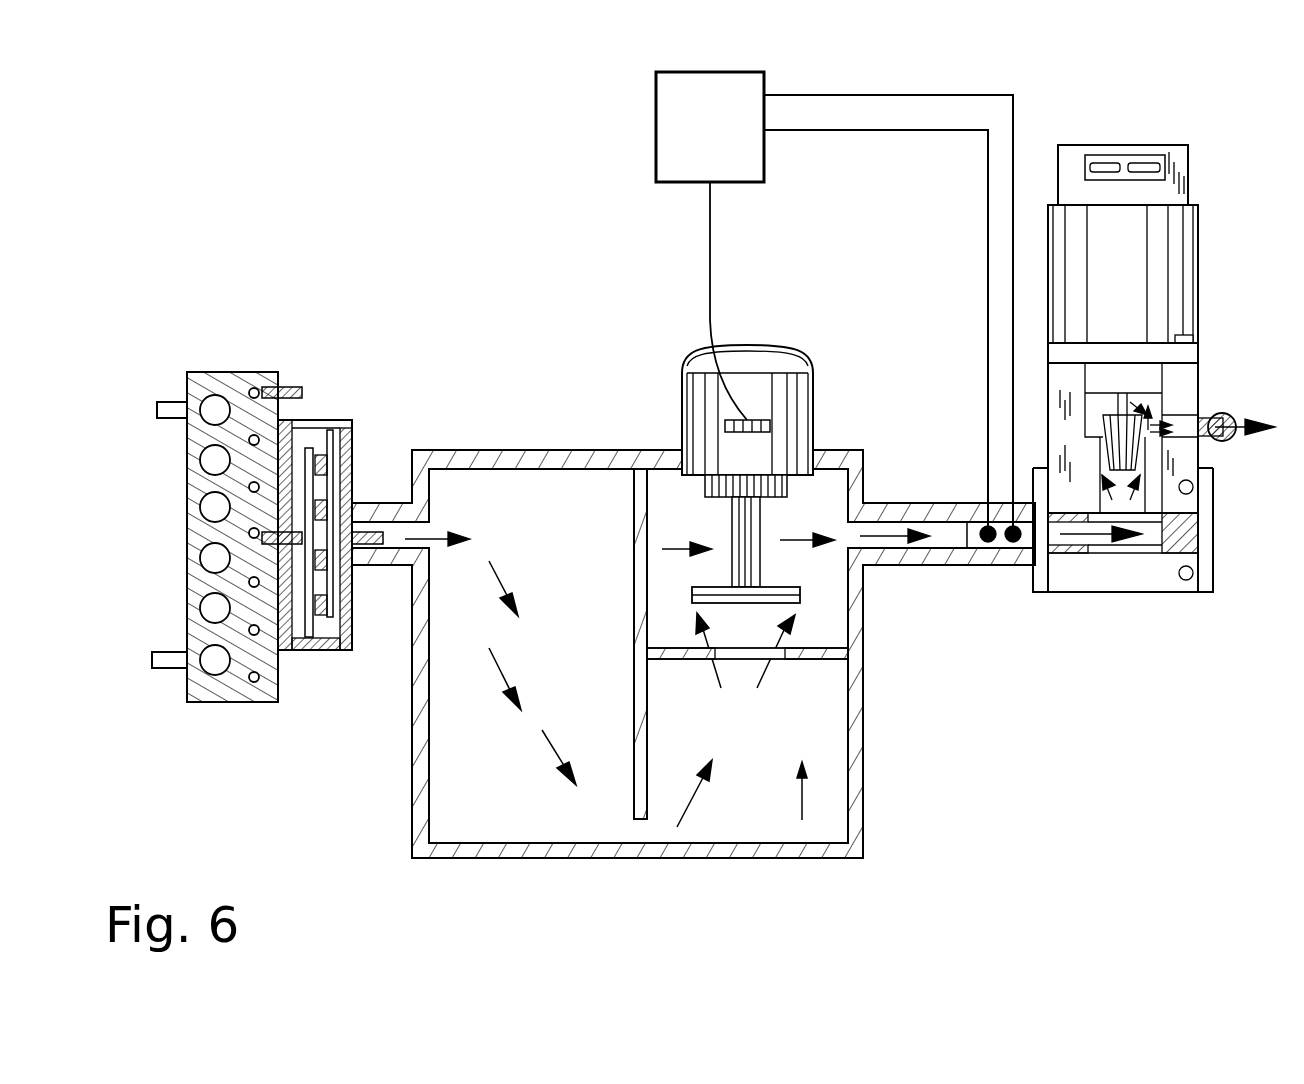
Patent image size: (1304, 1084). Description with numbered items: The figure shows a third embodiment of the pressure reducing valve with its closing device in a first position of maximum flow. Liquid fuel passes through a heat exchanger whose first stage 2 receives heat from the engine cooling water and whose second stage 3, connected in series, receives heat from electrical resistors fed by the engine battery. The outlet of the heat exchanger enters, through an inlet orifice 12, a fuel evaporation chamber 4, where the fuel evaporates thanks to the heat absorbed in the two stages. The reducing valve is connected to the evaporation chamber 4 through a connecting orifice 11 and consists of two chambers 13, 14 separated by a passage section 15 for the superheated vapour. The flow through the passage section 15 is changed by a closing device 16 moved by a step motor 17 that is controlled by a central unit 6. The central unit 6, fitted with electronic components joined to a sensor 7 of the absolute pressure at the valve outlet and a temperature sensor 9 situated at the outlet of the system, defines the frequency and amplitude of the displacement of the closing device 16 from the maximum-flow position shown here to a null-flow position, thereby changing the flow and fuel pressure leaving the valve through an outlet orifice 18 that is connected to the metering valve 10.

The first stage of heat exchanger 2 is at (210, 373).
The second stage of heat exchanger 3 is at (312, 435).
The fuel evaporation chamber 4 is at (500, 514).
The central unit 6 is at (834, 300).
The absolute pressure sensor 7 is at (992, 560).
The temperature sensor 9 is at (1013, 560).
The metering valve 10 is at (1137, 594).
The connecting orifice 11 is at (641, 828).
The inlet orifice 12 is at (400, 522).
The first chamber of reducing valve 13 is at (735, 753).
The second chamber of reducing valve 14 is at (825, 493).
The passage section 15 is at (783, 657).
The closing device 16 is at (740, 597).
The step motor 17 is at (783, 385).
The outlet orifice 18 is at (935, 530).